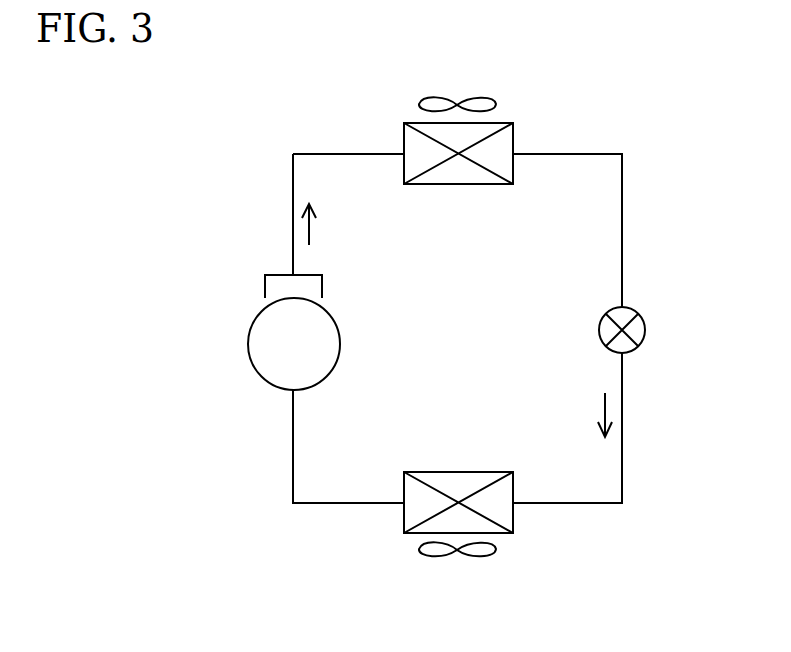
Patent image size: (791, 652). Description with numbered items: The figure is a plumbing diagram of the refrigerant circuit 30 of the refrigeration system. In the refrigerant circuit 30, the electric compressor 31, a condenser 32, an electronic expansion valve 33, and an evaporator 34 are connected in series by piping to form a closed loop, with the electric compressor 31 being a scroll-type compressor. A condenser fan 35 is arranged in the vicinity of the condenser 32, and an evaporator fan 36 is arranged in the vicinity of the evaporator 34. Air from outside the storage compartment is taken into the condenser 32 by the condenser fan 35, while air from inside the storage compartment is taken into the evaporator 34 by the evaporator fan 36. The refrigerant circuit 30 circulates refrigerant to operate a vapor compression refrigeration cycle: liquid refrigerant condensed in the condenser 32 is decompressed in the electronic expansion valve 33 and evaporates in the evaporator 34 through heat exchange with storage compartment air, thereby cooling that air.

The refrigerant circuit 30 is at (623, 205).
The electric compressor 31 is at (248, 327).
The condenser 32 is at (462, 186).
The electronic expansion valve 33 is at (647, 331).
The evaporator 34 is at (460, 471).
The condenser fan 35 is at (468, 100).
The evaporator fan 36 is at (468, 557).